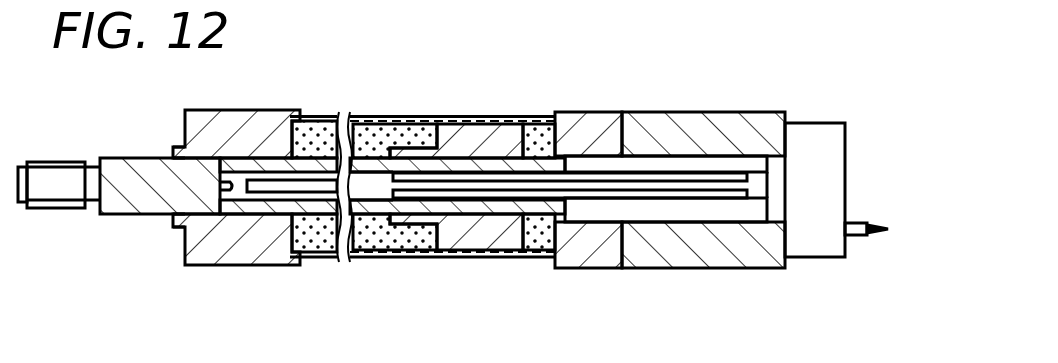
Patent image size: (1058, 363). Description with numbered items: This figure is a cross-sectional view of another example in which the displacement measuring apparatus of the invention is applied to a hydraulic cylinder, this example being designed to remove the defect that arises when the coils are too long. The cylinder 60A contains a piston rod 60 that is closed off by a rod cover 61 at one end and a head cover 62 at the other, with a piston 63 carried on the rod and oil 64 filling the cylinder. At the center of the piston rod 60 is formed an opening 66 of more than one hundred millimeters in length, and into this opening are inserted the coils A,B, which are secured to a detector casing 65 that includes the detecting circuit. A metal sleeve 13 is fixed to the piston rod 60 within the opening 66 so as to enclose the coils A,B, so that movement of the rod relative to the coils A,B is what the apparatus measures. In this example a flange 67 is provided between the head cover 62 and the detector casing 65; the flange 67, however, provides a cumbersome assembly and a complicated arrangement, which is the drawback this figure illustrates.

The piston rod 60 is at (125, 202).
The cylinder 60A is at (420, 245).
The rod cover 61 is at (240, 243).
The head cover 62 is at (595, 250).
The piston 63 is at (490, 235).
The oil 64 is at (313, 118).
The detector casing 65 is at (810, 145).
The opening 66 is at (180, 228).
The flange 67 is at (693, 250).
The metal sleeve 13 is at (472, 143).
The coils A,B is at (370, 182).